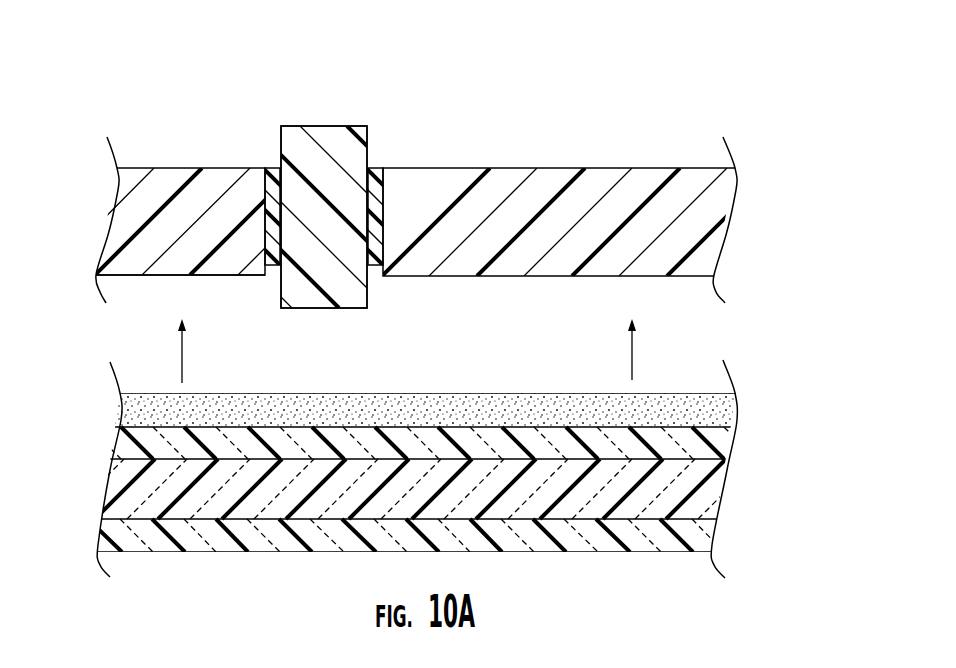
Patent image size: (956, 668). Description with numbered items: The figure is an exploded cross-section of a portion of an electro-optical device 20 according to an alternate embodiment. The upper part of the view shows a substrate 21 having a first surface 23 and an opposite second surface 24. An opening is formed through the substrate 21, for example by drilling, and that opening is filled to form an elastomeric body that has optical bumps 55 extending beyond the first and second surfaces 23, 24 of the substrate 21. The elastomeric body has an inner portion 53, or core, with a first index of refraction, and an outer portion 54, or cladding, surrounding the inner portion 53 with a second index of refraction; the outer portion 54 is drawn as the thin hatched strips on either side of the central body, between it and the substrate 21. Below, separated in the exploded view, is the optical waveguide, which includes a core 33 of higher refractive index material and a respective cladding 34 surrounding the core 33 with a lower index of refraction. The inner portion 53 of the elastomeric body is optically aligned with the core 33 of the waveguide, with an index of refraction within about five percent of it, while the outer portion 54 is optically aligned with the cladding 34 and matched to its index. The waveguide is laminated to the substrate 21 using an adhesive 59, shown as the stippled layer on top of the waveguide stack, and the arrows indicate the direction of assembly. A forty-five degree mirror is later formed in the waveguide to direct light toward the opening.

The electro-optical device 20 is at (314, 66).
The substrate 21 is at (600, 237).
The first surface 23 is at (150, 278).
The second surface 24 is at (157, 168).
The core 33 is at (718, 490).
The cladding 34 is at (712, 447).
The inner portion 53 is at (350, 155).
The outer portion 54 is at (271, 160).
The optical bump 55 is at (322, 137).
The adhesive 59 is at (137, 410).